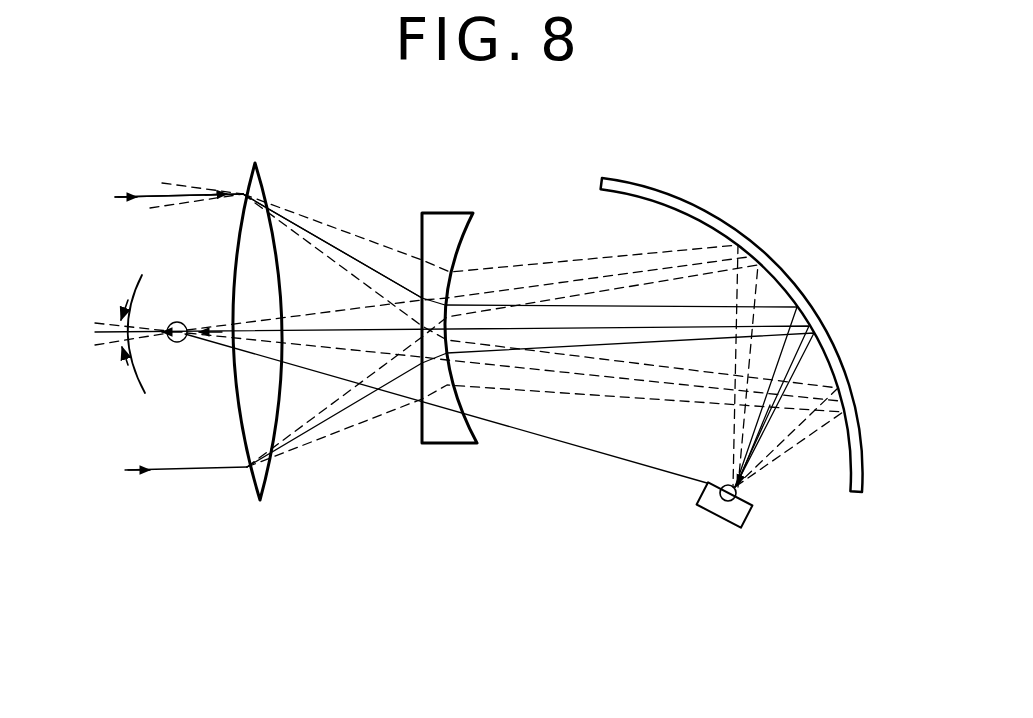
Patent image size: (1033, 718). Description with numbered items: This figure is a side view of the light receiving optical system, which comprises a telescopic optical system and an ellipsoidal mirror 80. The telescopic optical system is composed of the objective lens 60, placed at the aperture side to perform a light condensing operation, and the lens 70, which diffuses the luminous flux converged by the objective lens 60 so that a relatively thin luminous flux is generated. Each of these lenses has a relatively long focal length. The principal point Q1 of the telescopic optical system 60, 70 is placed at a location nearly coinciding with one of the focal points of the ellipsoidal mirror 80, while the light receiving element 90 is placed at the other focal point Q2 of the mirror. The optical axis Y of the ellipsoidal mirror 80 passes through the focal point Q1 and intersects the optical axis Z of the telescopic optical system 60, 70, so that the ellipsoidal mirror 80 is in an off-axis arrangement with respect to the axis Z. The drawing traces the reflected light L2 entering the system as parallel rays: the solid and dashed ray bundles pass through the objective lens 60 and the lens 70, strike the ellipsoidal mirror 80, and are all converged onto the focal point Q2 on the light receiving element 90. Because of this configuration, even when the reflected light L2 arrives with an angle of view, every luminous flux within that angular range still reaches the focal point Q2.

The objective lens 60 is at (260, 166).
The lens 70 is at (465, 210).
The ellipsoidal mirror 80 is at (670, 182).
The light receiving element 90 is at (750, 513).
The principal point Q1 is at (180, 343).
The focal point Q2 is at (707, 512).
The reflected light L2 is at (125, 197).
The optical axis of the telescopic optical system Z is at (310, 329).
The optical axis of the ellipsoidal mirror Y is at (530, 437).